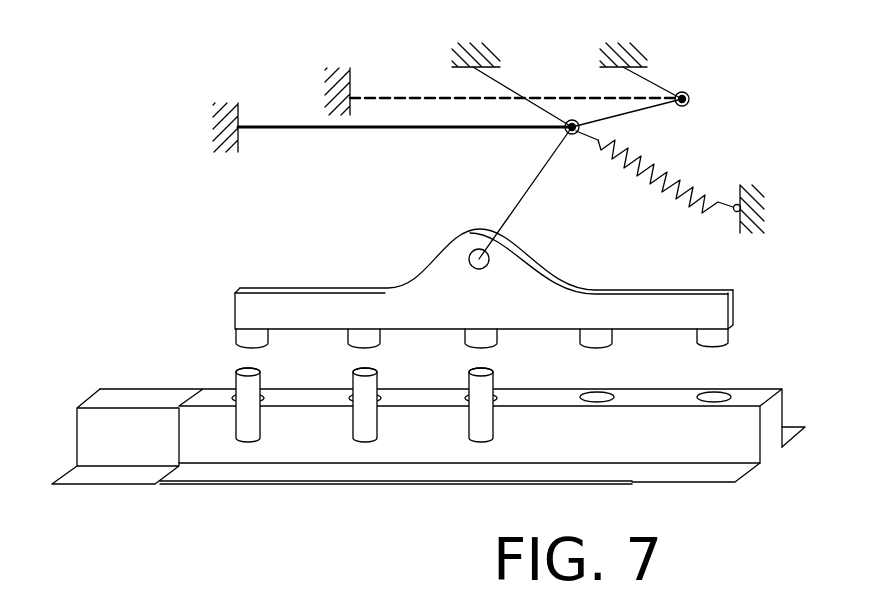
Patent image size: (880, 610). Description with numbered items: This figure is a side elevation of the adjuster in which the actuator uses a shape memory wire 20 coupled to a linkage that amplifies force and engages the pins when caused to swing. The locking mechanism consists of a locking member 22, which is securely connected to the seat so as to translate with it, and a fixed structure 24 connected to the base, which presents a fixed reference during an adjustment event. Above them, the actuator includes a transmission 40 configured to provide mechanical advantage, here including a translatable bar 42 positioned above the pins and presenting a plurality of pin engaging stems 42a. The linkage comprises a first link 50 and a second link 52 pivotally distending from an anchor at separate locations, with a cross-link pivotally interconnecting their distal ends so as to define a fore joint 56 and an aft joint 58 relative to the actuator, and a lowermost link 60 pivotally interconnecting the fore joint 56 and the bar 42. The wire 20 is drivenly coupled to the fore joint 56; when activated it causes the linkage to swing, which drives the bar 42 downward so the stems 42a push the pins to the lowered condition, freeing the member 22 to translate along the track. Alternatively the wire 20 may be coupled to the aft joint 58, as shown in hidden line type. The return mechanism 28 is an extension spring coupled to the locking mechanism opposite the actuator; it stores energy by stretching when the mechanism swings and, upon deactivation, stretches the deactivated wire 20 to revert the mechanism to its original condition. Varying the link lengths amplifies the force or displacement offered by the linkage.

The shape memory wire 20 is at (352, 128).
The locking member 22 is at (760, 393).
The fixed structure 24 is at (153, 398).
The return mechanism 28 is at (712, 184).
The transmission 40 is at (495, 145).
The translatable bar 42 is at (434, 265).
The pin engaging stems 42a is at (243, 335).
The first link 50 is at (517, 97).
The second link 52 is at (667, 84).
The fore joint 56 is at (573, 135).
The aft joint 58 is at (691, 99).
The lowermost link 60 is at (520, 203).